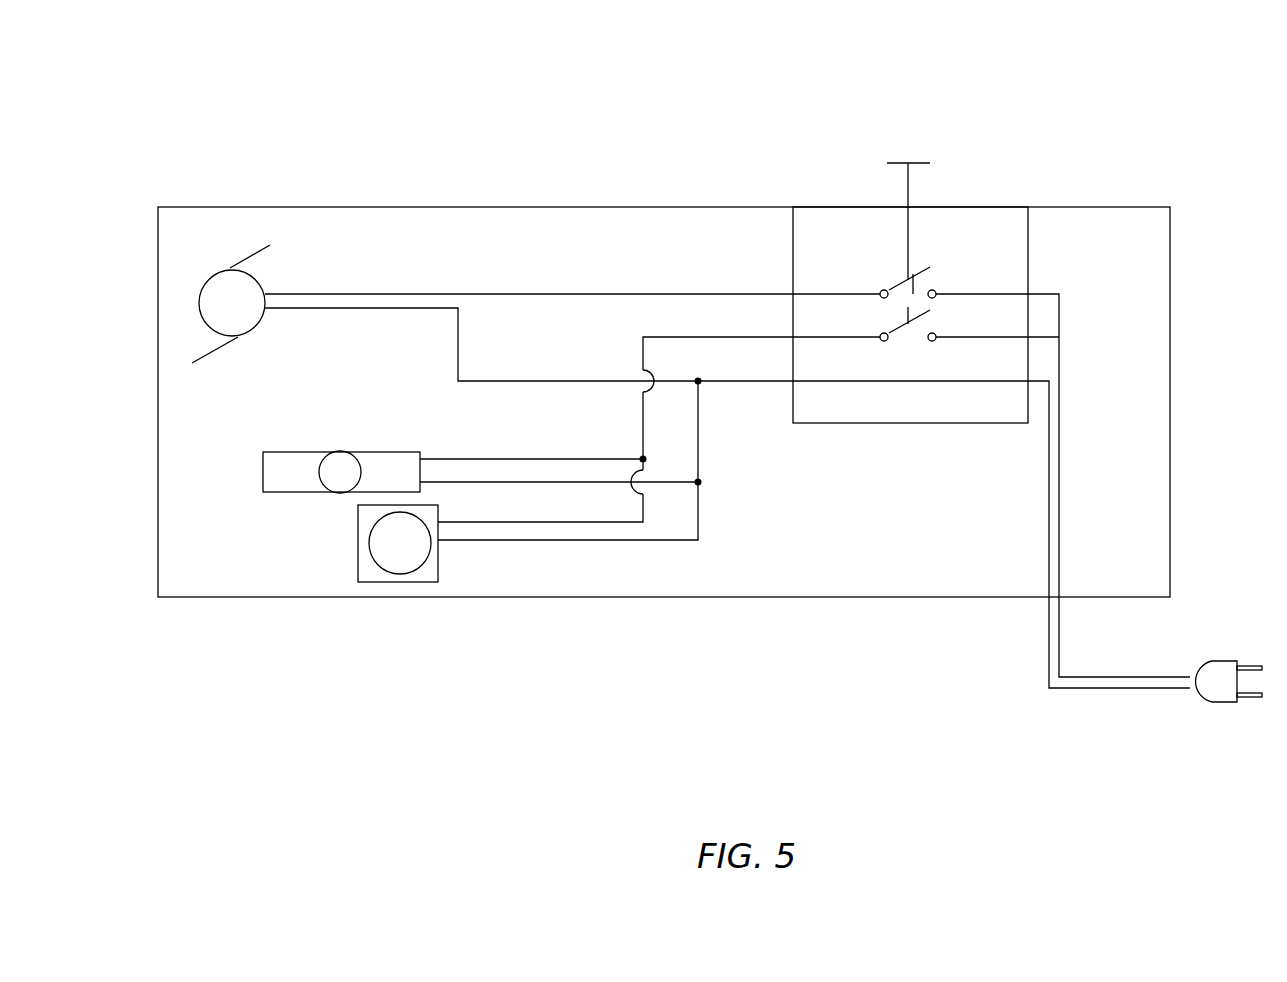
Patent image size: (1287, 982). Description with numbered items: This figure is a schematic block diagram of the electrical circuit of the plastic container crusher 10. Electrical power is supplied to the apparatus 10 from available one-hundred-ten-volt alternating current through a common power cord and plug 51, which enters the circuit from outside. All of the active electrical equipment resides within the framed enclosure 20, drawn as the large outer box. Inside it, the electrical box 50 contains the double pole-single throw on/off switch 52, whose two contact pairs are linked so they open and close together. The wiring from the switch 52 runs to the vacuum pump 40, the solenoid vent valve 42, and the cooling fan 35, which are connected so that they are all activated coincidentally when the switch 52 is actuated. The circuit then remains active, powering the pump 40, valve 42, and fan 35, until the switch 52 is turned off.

The plastic container crusher 10 is at (1202, 182).
The framed enclosure 20 is at (1172, 363).
The cooling fan 35 is at (427, 573).
The vacuum pump 40 is at (220, 270).
The solenoid vent valve 42 is at (300, 482).
The electrical box 50 is at (1030, 240).
The power cord 51 is at (1218, 670).
The on/off switch 52 is at (915, 158).